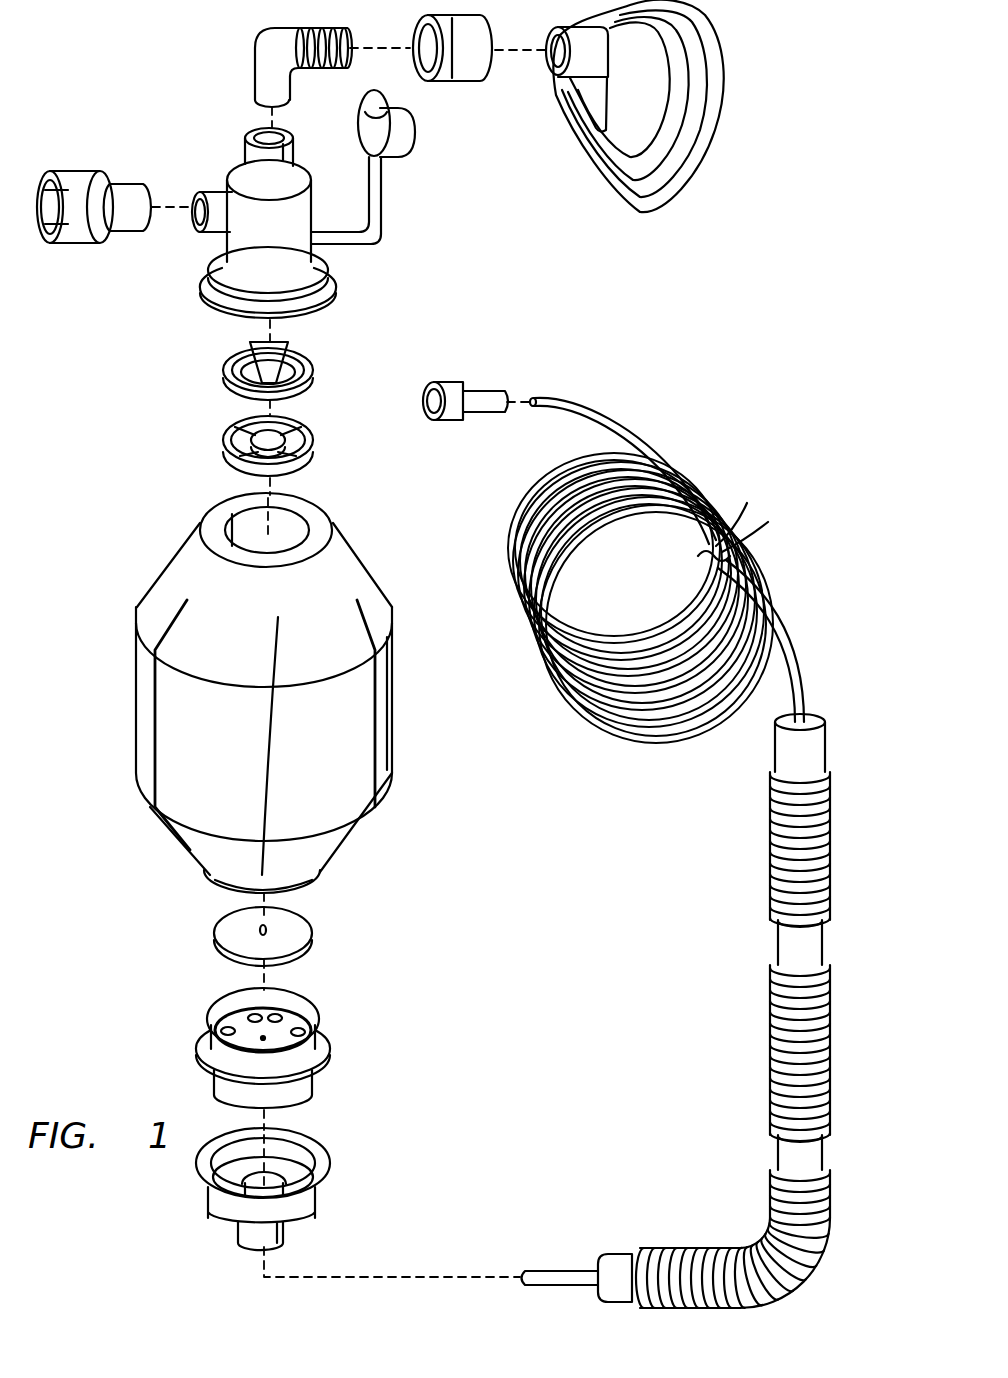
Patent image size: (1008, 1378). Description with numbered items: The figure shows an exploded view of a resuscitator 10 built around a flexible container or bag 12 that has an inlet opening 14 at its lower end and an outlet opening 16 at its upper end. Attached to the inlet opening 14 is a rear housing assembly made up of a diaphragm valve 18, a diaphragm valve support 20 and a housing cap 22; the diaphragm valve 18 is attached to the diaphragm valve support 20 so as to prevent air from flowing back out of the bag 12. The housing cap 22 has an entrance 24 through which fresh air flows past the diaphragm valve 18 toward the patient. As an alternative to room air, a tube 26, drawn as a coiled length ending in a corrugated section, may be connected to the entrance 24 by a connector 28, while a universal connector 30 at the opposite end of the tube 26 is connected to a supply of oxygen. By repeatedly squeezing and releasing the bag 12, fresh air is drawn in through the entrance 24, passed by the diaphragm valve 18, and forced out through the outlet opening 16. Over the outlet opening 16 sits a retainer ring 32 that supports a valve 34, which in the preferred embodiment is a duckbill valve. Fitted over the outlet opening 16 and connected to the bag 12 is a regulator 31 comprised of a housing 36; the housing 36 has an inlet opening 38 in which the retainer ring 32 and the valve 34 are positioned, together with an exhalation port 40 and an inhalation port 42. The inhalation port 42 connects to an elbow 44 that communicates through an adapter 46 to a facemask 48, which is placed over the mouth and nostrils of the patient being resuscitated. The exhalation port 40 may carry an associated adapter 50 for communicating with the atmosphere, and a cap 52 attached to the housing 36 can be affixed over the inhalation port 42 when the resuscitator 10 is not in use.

The resuscitator 10 is at (447, 312).
The bag 12 is at (372, 574).
The inlet opening 14 is at (312, 882).
The outlet opening 16 is at (293, 531).
The diaphragm valve 18 is at (312, 940).
The diaphragm valve support 20 is at (330, 1047).
The housing cap 22 is at (319, 1195).
The entrance 24 is at (247, 1246).
The tube 26 is at (772, 908).
The connector 28 is at (585, 1266).
The universal connector 30 is at (448, 382).
The regulator 31 is at (186, 308).
The retainer ring 32 is at (313, 445).
The valve 34 is at (313, 372).
The housing 36 is at (330, 268).
The inlet opening 38 is at (336, 300).
The exhalation port 40 is at (203, 228).
The inhalation port 42 is at (258, 128).
The elbow 44 is at (255, 60).
The adapter 46 is at (455, 84).
The facemask 48 is at (590, 160).
The adapter 50 is at (72, 171).
The cap 52 is at (413, 140).